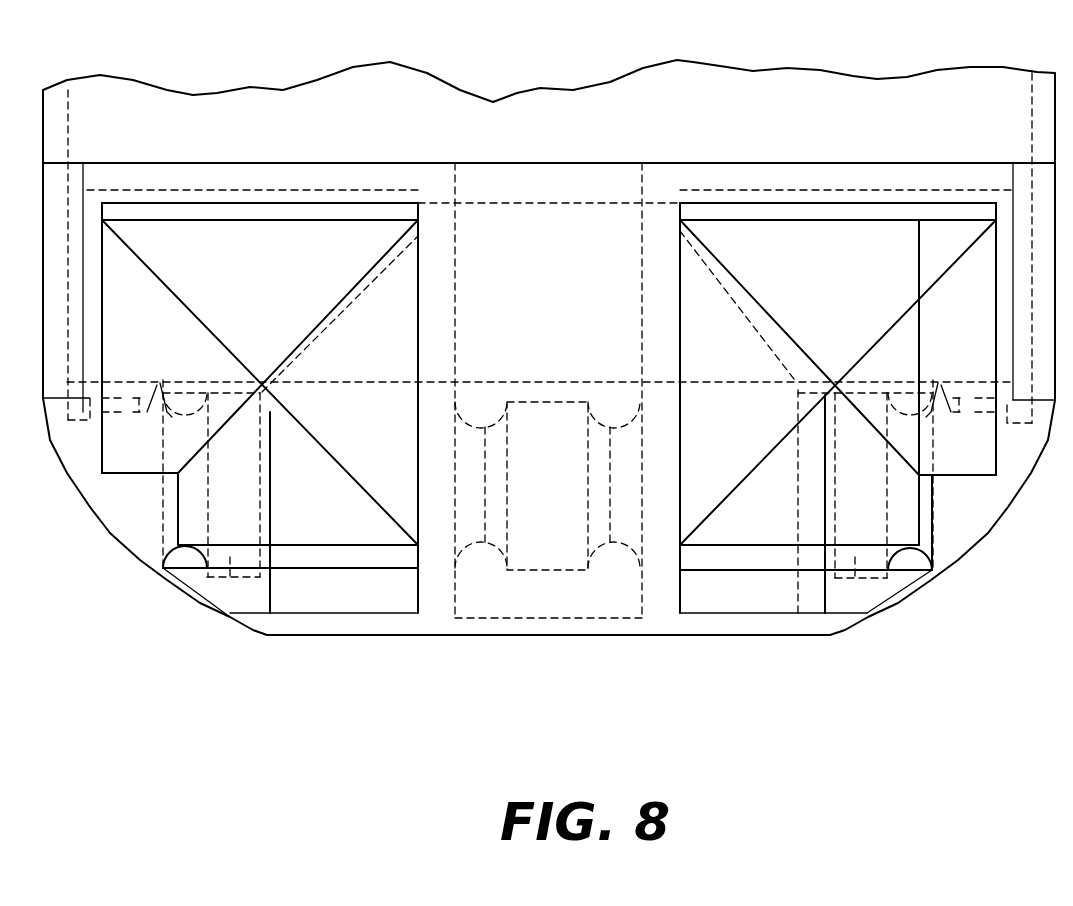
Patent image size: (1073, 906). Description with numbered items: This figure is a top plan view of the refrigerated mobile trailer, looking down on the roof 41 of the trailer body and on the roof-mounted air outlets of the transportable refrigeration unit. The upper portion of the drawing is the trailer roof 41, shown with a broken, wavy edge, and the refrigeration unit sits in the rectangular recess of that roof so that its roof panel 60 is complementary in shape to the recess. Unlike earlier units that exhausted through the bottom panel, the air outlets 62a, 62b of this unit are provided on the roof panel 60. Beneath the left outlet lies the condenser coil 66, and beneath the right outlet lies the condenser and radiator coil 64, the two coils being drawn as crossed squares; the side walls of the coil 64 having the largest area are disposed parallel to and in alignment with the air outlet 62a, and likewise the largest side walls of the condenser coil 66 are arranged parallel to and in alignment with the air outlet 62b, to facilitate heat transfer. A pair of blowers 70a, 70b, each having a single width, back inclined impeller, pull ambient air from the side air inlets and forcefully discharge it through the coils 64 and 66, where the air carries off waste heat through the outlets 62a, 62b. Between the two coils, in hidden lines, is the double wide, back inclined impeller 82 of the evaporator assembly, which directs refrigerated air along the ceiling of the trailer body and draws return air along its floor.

The roof 41 is at (549, 325).
The air outlet 62a is at (260, 325).
The air outlet 62b is at (838, 325).
The condenser coil 66 is at (272, 331).
The radiator coil 64 is at (823, 332).
The roof panel 60 is at (562, 302).
The double wide, back inclined impeller 82 is at (548, 532).
The blower 70a is at (857, 537).
The blower 70b is at (238, 533).